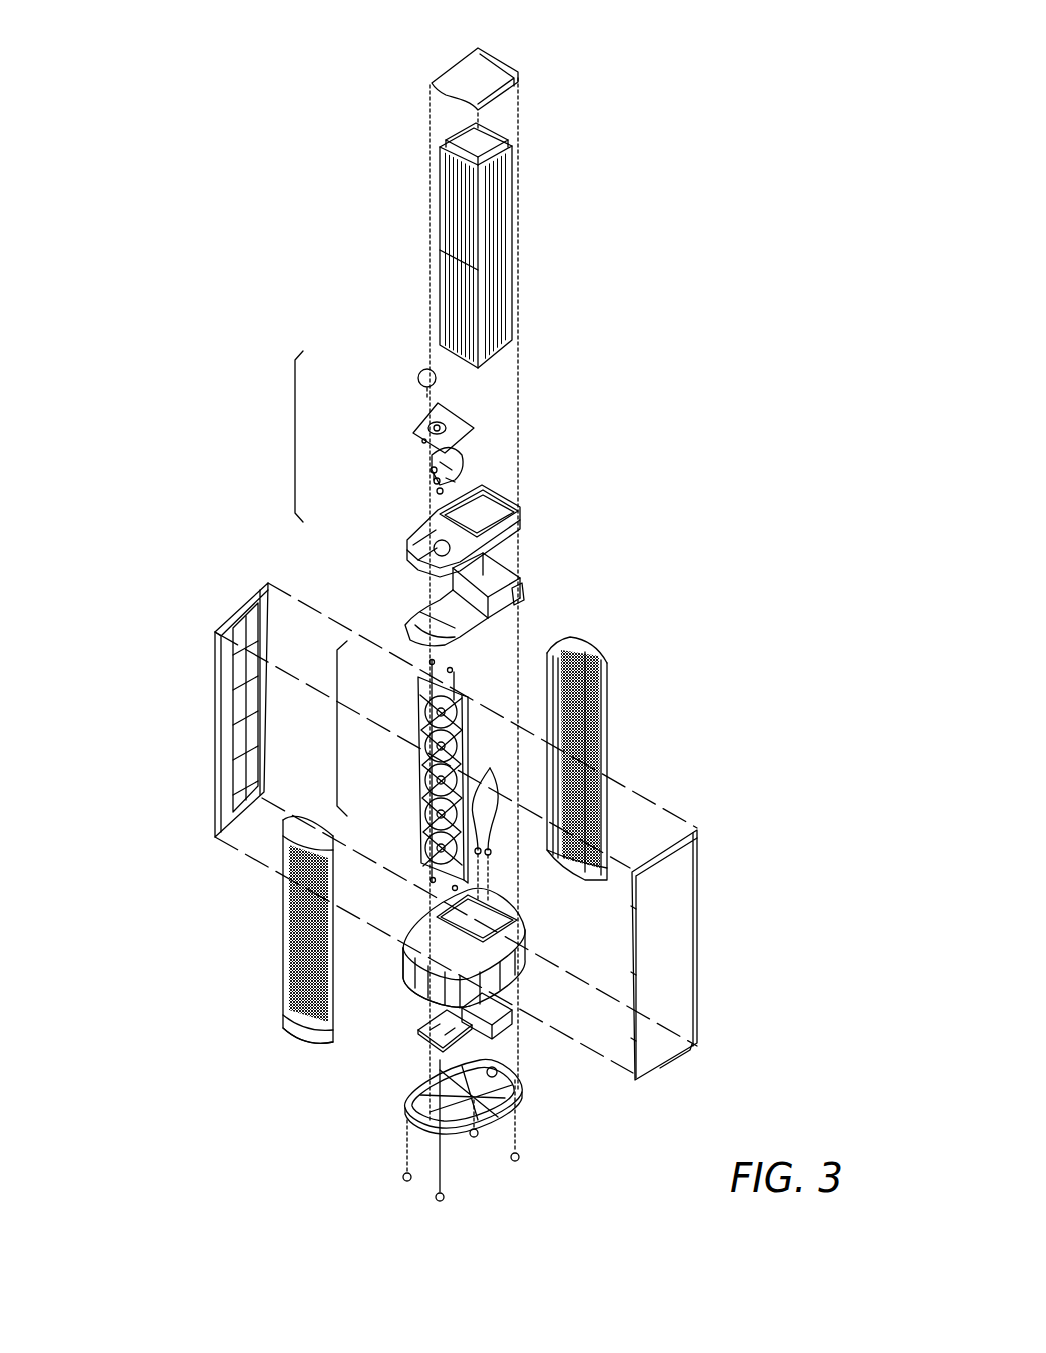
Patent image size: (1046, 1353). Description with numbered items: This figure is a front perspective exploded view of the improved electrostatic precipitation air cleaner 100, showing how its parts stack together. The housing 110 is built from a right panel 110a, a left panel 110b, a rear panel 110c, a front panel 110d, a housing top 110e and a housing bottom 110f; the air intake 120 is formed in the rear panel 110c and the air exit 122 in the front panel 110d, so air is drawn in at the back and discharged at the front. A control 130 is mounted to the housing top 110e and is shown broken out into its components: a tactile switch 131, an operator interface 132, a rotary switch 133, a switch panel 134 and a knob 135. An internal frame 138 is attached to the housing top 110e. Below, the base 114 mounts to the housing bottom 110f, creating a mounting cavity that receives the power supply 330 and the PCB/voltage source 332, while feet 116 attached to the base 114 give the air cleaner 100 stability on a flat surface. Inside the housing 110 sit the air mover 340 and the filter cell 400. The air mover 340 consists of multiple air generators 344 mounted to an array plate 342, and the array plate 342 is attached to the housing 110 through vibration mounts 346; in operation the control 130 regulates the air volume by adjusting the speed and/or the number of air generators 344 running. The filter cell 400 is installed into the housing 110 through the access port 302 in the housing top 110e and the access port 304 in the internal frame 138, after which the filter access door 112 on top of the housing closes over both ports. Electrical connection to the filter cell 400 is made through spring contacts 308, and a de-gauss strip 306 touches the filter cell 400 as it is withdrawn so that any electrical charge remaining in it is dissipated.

The improved electrostatic precipitation air cleaner 100 is at (710, 121).
The housing 110 is at (673, 361).
The right panel 110a is at (668, 923).
The left panel 110b is at (213, 695).
The rear panel 110c is at (731, 760).
The front panel 110d is at (296, 1034).
The housing top 110e is at (653, 488).
The housing bottom 110f is at (405, 975).
The filter access door 112 is at (473, 73).
The base 114 is at (405, 1108).
The feet 116 is at (515, 1162).
The air intake 120 is at (577, 720).
The air exit 122 is at (287, 945).
The control 130 is at (267, 436).
The tactile switch 131 is at (437, 493).
The operator interface 132 is at (432, 476).
The rotary switch 133 is at (428, 458).
The switch panel 134 is at (416, 420).
The knob 135 is at (418, 381).
The internal frame 138 is at (522, 598).
The access port 302 is at (492, 512).
The access port 304 is at (481, 593).
The de-gauss strip 306 is at (513, 892).
The spring contacts 308 is at (490, 770).
The power supply 330 is at (500, 1010).
The PCB/voltage source 332 is at (470, 1033).
The air mover 340 is at (316, 728).
The array plate 342 is at (422, 713).
The air generators 344 is at (425, 752).
The vibration mounts 346 is at (433, 658).
The filter cell 400 is at (513, 290).